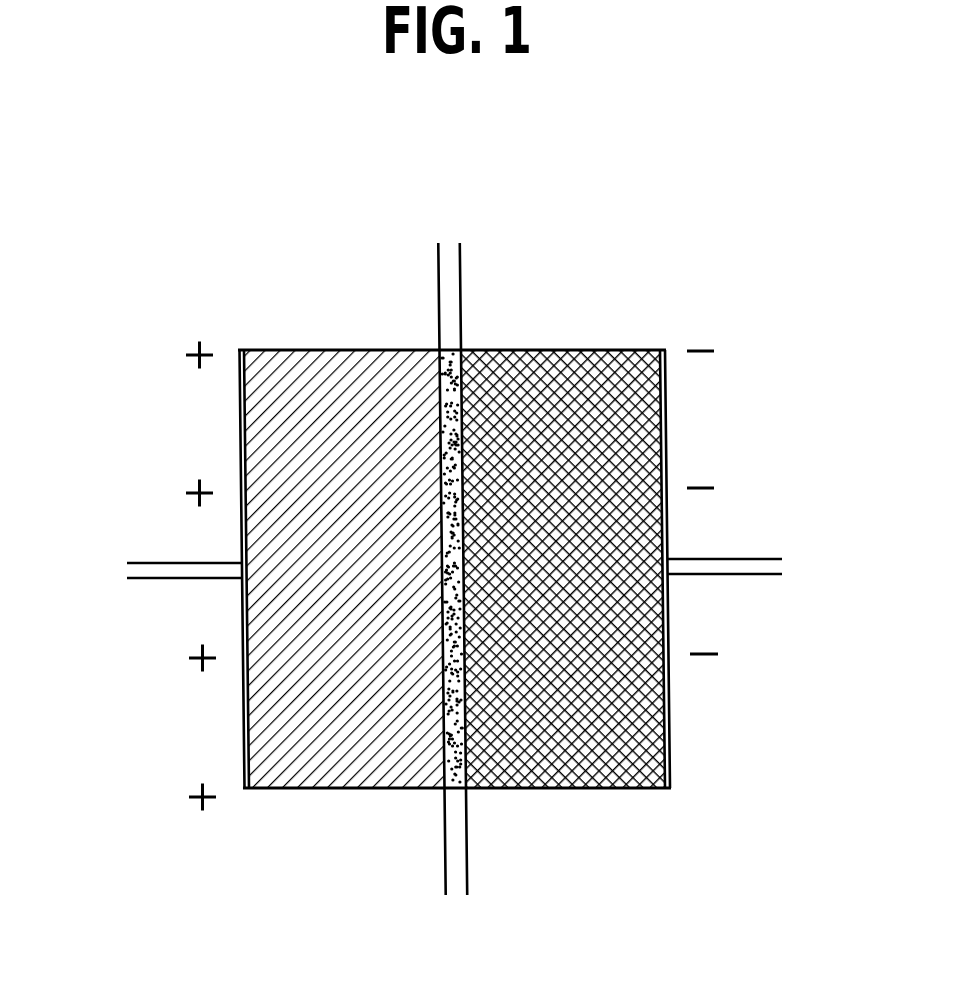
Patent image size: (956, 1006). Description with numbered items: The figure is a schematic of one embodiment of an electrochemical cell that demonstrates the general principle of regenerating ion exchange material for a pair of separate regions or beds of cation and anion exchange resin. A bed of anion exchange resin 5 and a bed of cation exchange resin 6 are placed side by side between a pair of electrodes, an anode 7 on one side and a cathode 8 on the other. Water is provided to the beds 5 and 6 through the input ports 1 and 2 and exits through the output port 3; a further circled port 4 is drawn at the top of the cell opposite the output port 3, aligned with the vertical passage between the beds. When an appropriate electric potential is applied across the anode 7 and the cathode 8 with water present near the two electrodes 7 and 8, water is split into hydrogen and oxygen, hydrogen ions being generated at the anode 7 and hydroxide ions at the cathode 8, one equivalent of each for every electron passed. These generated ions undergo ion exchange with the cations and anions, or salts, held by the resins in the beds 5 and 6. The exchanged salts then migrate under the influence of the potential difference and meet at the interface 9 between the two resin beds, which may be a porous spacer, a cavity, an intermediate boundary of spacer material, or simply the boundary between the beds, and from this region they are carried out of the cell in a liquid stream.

The input port 1 is at (151, 572).
The input port 2 is at (756, 567).
The output port 3 is at (457, 880).
The top conduit 4 is at (448, 262).
The bed of anion exchange resin 5 is at (600, 745).
The bed of cation exchange resin 6 is at (283, 734).
The anode 7 is at (240, 392).
The cathode 8 is at (663, 399).
The interface 9 is at (468, 790).